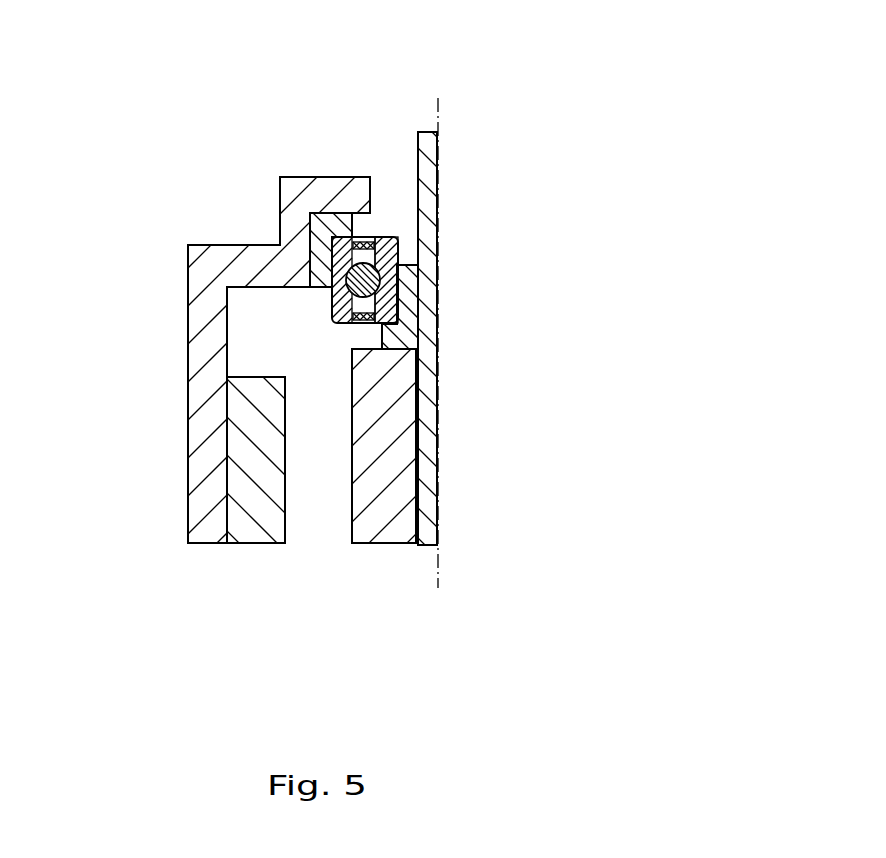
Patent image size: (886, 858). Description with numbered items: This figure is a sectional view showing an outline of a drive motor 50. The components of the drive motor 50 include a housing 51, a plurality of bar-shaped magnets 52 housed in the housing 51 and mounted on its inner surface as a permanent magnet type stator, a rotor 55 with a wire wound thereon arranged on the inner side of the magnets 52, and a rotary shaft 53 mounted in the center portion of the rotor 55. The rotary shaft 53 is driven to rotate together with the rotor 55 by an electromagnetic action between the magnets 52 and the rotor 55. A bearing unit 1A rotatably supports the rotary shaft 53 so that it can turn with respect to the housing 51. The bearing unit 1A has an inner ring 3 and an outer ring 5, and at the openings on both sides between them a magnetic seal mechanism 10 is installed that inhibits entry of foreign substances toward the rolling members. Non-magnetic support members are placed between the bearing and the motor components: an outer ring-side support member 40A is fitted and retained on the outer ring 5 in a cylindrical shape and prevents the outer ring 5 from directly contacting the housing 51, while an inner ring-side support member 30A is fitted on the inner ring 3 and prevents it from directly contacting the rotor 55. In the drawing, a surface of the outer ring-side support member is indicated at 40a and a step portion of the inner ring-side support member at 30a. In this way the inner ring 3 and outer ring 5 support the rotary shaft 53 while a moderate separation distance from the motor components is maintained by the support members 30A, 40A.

The drive motor 50 is at (497, 113).
The housing 51 is at (303, 188).
The bar-shaped magnets 52 is at (243, 455).
The rotary shaft 53 is at (430, 163).
The rotor 55 is at (402, 458).
The outer ring-side support member 40A is at (312, 240).
The outer member surface 40a is at (344, 220).
The inner ring-side support member 30A is at (410, 297).
The inner member step 30a is at (384, 335).
The bearing unit 1A is at (379, 241).
The inner ring 3 is at (392, 255).
The outer ring 5 is at (336, 313).
The magnetic seal mechanism 10 is at (362, 236).